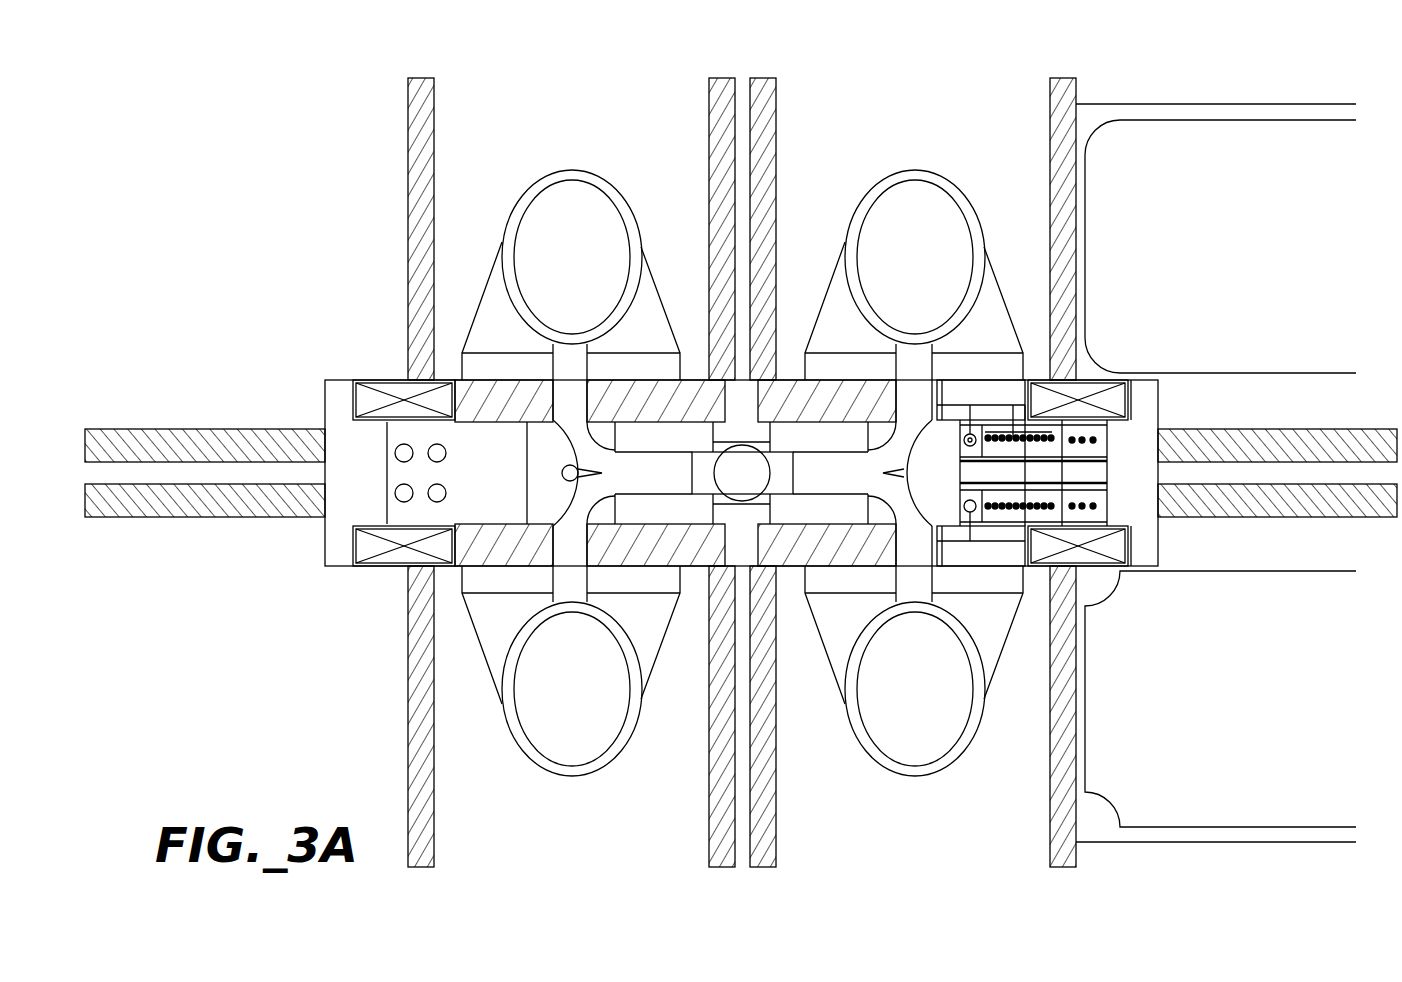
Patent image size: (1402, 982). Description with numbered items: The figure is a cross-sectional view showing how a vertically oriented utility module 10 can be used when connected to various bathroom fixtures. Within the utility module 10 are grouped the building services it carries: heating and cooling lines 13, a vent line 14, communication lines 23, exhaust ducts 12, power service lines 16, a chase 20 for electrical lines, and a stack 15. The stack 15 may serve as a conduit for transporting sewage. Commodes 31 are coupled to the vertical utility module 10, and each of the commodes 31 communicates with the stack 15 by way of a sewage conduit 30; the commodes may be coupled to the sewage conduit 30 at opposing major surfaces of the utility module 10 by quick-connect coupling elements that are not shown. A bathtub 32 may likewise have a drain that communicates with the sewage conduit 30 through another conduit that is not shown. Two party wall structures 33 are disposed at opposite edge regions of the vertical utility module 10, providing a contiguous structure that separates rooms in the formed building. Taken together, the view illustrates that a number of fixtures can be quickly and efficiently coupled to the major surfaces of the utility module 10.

The utility module 10 is at (325, 544).
The exhaust ducts 12 is at (400, 381).
The heating and cooling lines 13 is at (418, 463).
The vent line 14 is at (562, 469).
The stack 15 is at (742, 473).
The power service lines 16 is at (963, 503).
The chase 20 is at (978, 562).
The communication lines 23 is at (1034, 506).
The sewage conduit 30 is at (742, 473).
The commodes 31 is at (937, 172).
The bathtub 32 is at (1216, 473).
The party wall structures 33 is at (232, 429).